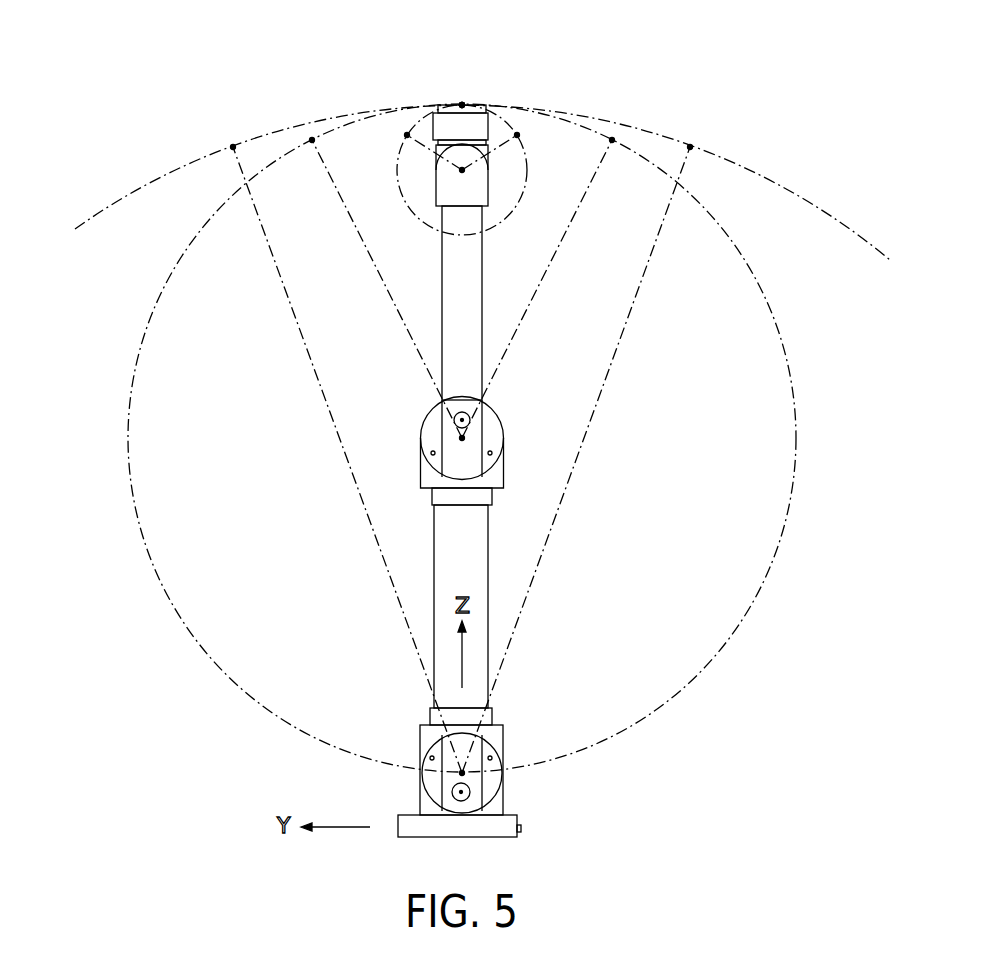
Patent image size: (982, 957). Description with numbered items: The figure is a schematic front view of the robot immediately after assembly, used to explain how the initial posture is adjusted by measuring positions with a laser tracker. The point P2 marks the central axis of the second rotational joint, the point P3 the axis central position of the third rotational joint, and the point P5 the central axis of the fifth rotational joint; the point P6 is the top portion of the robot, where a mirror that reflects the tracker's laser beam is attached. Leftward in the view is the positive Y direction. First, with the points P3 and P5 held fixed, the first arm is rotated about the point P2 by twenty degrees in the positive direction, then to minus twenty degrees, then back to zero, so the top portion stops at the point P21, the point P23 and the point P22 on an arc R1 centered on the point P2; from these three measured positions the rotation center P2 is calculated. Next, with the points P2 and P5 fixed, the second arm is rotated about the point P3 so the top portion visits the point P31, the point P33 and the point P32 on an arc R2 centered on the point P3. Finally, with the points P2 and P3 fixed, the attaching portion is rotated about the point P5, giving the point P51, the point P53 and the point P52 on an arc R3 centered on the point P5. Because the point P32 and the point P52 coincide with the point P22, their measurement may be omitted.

The arc R1 is at (138, 188).
The arc R2 is at (165, 283).
The arc R3 is at (398, 155).
The point P2 is at (462, 773).
The point P3 is at (462, 438).
The point P5 is at (462, 170).
The point P6 is at (462, 105).
The point P22 is at (462, 105).
The point P32 is at (462, 105).
The point P52 is at (462, 105).
The point P21 is at (233, 147).
The point P23 is at (690, 147).
The point P31 is at (312, 140).
The point P33 is at (612, 140).
The point P51 is at (407, 135).
The point P53 is at (517, 135).